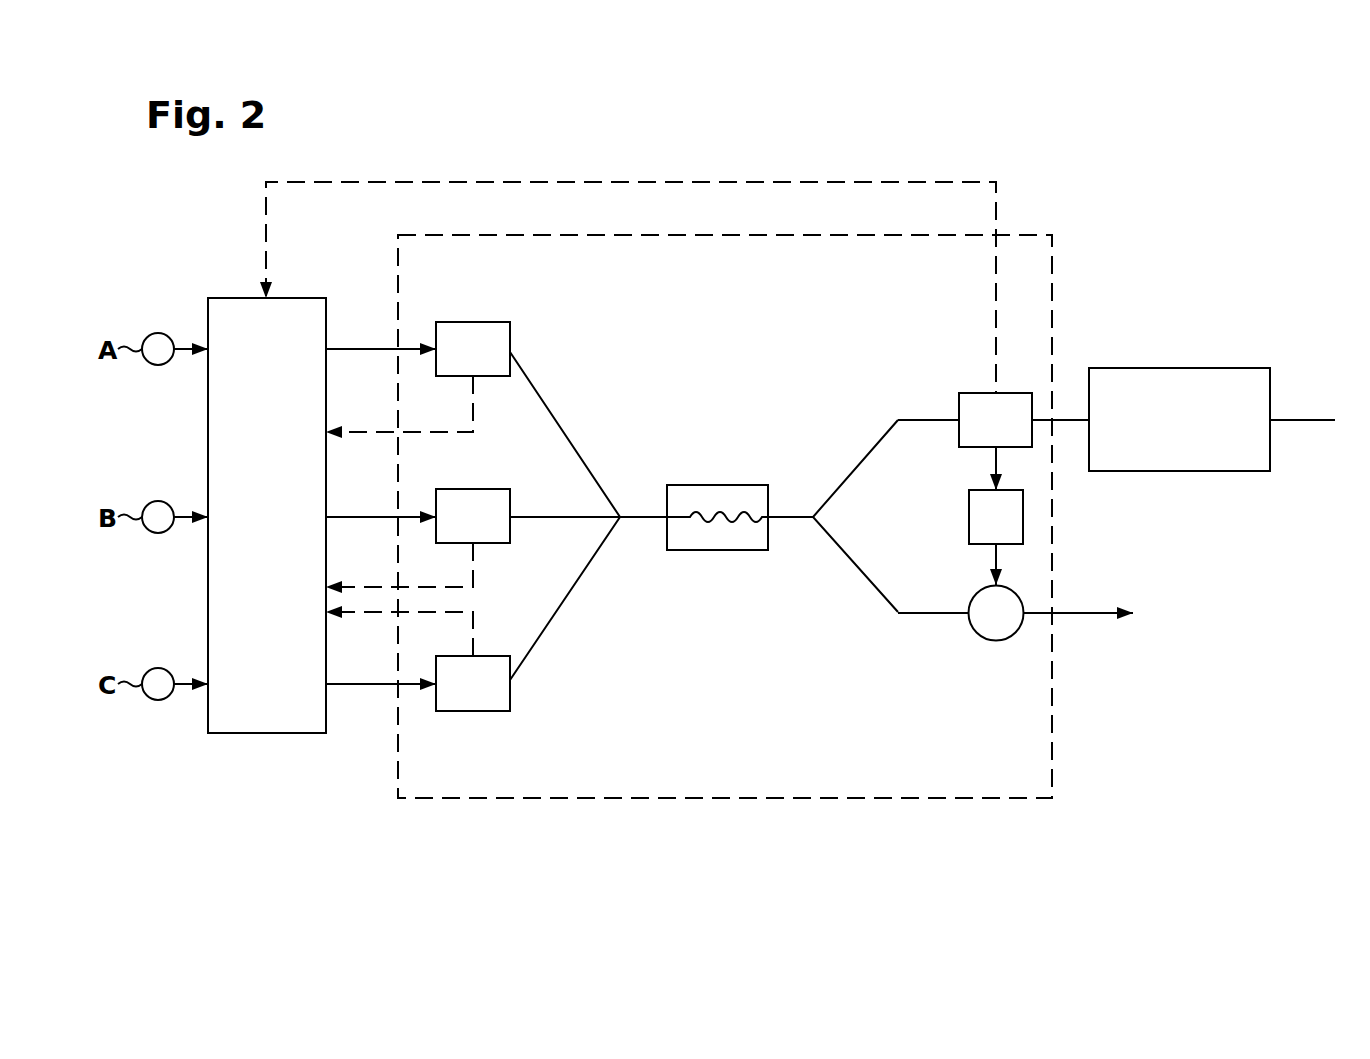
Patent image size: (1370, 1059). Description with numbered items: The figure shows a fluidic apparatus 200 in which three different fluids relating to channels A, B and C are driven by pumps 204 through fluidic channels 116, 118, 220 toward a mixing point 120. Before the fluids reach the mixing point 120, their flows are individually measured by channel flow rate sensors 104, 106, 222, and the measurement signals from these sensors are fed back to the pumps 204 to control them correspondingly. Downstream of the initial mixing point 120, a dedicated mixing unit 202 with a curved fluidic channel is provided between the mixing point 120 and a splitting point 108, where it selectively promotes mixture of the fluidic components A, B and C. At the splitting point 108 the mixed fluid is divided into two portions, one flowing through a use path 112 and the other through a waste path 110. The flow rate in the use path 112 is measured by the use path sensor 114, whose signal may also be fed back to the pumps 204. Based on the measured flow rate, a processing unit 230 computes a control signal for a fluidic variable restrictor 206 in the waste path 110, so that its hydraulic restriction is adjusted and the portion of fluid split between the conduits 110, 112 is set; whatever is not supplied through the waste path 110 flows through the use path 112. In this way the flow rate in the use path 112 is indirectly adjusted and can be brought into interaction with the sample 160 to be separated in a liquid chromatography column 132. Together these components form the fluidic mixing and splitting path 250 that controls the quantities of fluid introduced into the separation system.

The fluidic apparatus 200 is at (1092, 302).
The pumps 204 is at (250, 298).
The fluidic mixing and splitting path 250 is at (725, 800).
The channel flow rate sensor 104 is at (473, 322).
The channel flow rate sensor 106 is at (473, 489).
The channel flow rate sensor 222 is at (474, 711).
The fluidic channel 116 is at (365, 349).
The fluidic channel 118 is at (365, 517).
The fluidic channel 220 is at (367, 684).
The mixing point 120 is at (623, 504).
The mixing unit 202 is at (717, 485).
The splitting point 108 is at (812, 514).
The use path 112 is at (905, 419).
The use path sensor 114 is at (982, 393).
The liquid chromatography column 132 is at (1178, 368).
The sample 160 is at (1081, 440).
The processing unit 230 is at (969, 516).
The fluidic variable restrictor 206 is at (996, 641).
The waste path 110 is at (923, 614).